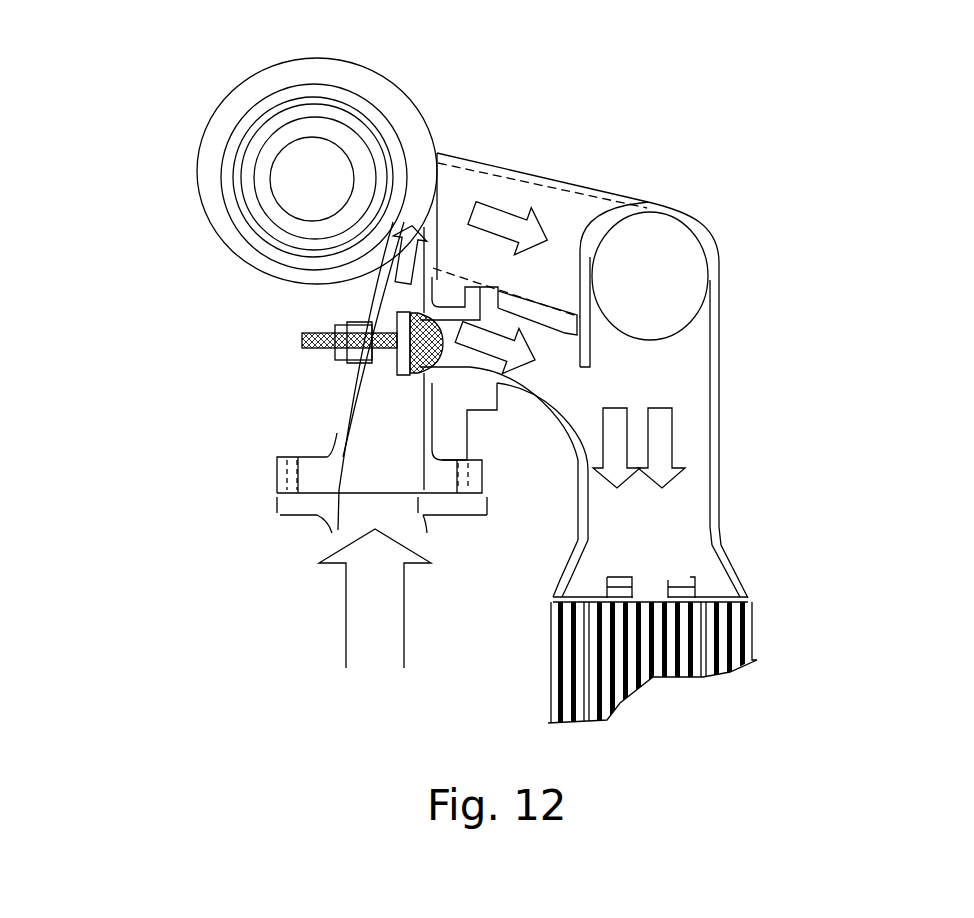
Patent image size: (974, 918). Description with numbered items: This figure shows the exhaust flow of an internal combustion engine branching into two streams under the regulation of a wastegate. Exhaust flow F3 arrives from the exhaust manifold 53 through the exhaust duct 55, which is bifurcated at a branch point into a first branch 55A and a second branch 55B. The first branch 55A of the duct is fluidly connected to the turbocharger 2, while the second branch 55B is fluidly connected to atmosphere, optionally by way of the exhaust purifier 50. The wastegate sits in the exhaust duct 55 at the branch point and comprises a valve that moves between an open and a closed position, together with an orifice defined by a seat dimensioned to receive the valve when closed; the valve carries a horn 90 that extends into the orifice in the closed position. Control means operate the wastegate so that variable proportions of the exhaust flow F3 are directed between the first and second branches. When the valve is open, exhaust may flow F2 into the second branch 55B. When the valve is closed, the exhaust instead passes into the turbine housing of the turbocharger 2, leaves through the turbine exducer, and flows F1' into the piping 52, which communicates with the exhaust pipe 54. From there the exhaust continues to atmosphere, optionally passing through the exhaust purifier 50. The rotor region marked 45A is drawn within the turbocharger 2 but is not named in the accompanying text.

The turbocharger 2 is at (378, 72).
The fan rotor 45A is at (325, 202).
The piping 52 is at (583, 182).
The exhaust pipe 54 is at (707, 443).
The exhaust duct 55 is at (342, 407).
The first branch 55A is at (433, 277).
The second branch 55B is at (537, 397).
The horn 90 is at (392, 350).
The exhaust manifold 53 is at (290, 500).
The exhaust purifier 50 is at (630, 627).
The exhaust flow (turbine outlet) F1' is at (585, 143).
The exhaust flow (second branch) F2 is at (484, 345).
The exhaust flow F3 is at (360, 600).